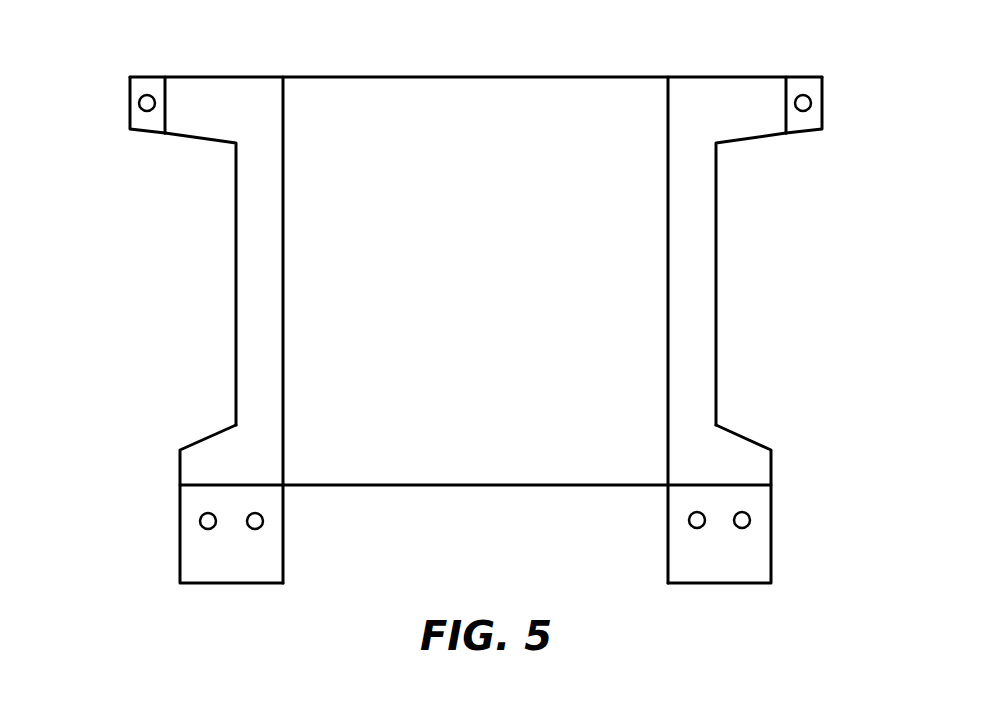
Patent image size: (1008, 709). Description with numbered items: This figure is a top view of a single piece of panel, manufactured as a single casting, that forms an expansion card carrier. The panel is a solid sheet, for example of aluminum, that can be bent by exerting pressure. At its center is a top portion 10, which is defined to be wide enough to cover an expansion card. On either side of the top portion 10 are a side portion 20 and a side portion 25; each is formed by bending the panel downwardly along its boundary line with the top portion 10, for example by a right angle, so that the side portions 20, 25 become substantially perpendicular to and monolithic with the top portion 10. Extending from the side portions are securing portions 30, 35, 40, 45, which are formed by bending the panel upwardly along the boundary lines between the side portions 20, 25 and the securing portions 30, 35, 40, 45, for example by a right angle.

The top portion 10 is at (476, 77).
The side portion 20 is at (184, 140).
The side portion 25 is at (769, 140).
The securing portion 30 is at (180, 520).
The securing portion 35 is at (772, 518).
The securing portion 40 is at (129, 103).
The securing portion 45 is at (823, 103).